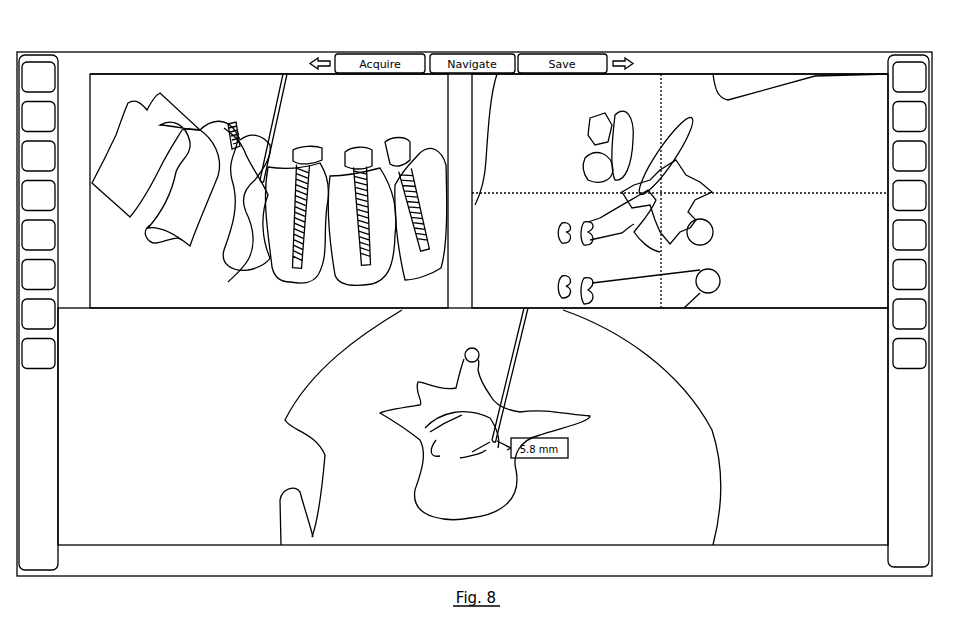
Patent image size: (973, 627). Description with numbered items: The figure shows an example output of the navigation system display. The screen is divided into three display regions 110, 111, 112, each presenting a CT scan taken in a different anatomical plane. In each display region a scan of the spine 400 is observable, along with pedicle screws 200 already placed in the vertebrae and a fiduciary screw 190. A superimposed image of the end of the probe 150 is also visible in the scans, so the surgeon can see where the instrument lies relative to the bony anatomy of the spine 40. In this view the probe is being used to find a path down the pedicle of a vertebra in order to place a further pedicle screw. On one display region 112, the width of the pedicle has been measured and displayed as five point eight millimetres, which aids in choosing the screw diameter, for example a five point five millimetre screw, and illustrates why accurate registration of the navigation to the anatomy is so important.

The display region 110 is at (182, 74).
The display region 111 is at (690, 74).
The display region 112 is at (808, 352).
The probe 150 is at (280, 110).
The fiduciary screw 190 is at (237, 126).
The pedicle screws 200 is at (356, 150).
The scan of the spine 400 is at (186, 224).
The spine 40 is at (427, 470).